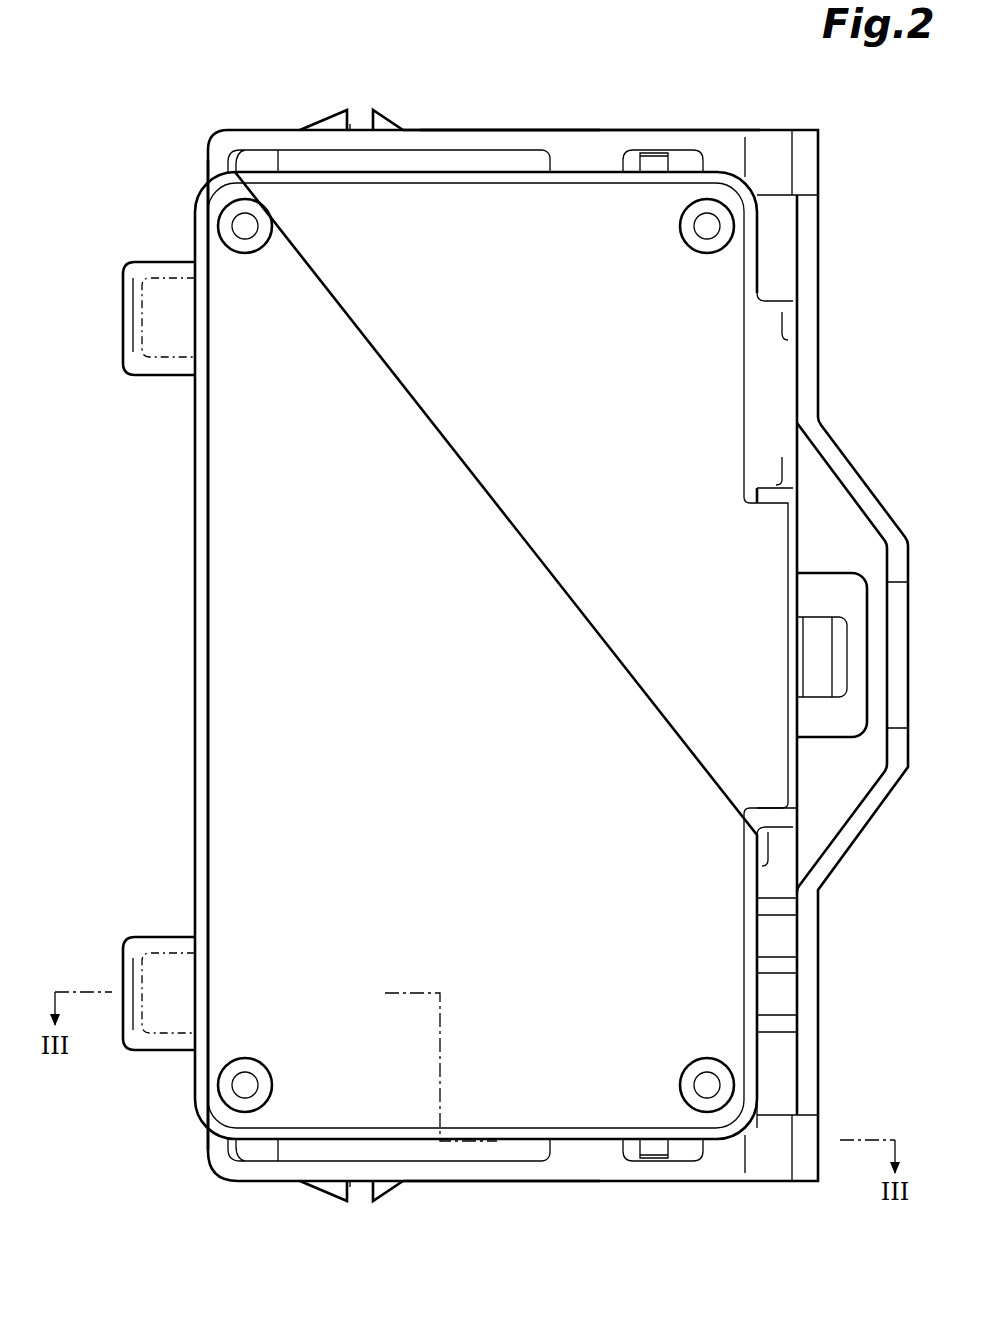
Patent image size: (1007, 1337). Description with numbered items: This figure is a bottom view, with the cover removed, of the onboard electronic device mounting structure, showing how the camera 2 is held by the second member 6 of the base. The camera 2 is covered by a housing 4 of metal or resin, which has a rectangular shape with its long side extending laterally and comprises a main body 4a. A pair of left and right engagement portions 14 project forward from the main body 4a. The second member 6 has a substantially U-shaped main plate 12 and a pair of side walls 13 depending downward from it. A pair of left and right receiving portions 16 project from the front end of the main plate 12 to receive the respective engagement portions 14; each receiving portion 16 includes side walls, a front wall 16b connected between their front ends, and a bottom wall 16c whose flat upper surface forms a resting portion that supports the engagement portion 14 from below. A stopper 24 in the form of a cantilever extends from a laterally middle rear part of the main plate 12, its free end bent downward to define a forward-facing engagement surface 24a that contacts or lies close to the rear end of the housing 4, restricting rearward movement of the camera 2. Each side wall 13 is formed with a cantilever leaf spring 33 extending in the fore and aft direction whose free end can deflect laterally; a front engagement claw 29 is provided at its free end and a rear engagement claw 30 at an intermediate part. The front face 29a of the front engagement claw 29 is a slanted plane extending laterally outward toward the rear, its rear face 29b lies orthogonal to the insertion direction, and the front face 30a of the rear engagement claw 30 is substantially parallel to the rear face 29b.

The camera 2 is at (230, 540).
The housing 4 is at (191, 588).
The main body 4a is at (223, 757).
The second member 6 is at (600, 127).
The main plate 12 is at (800, 870).
The side wall 13 is at (720, 130).
The engagement portion 14 is at (178, 277).
The receiving portion 16 is at (121, 289).
The front wall 16b is at (123, 340).
The bottom wall 16c is at (147, 367).
The stopper 24 is at (838, 570).
The engagement surface 24a is at (792, 653).
The front engagement claw 29 is at (339, 108).
The front face 29a is at (330, 118).
The rear face 29b is at (353, 122).
The rear engagement claw 30 is at (396, 114).
The front face 30a is at (372, 108).
The cantilever leaf spring 33 is at (481, 127).